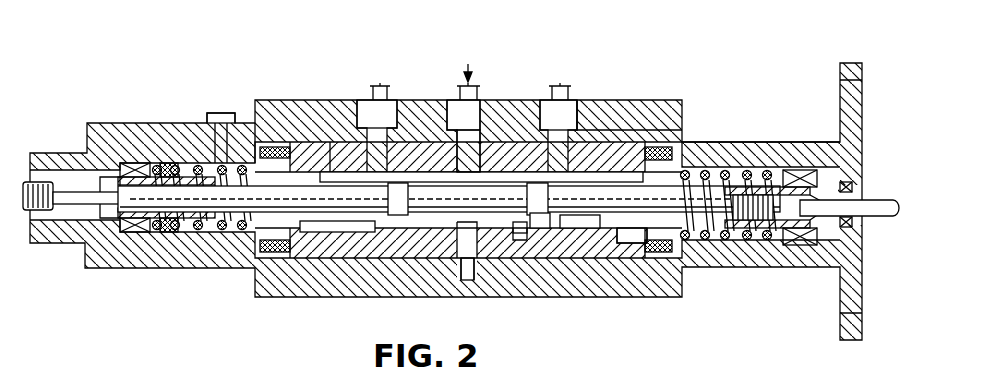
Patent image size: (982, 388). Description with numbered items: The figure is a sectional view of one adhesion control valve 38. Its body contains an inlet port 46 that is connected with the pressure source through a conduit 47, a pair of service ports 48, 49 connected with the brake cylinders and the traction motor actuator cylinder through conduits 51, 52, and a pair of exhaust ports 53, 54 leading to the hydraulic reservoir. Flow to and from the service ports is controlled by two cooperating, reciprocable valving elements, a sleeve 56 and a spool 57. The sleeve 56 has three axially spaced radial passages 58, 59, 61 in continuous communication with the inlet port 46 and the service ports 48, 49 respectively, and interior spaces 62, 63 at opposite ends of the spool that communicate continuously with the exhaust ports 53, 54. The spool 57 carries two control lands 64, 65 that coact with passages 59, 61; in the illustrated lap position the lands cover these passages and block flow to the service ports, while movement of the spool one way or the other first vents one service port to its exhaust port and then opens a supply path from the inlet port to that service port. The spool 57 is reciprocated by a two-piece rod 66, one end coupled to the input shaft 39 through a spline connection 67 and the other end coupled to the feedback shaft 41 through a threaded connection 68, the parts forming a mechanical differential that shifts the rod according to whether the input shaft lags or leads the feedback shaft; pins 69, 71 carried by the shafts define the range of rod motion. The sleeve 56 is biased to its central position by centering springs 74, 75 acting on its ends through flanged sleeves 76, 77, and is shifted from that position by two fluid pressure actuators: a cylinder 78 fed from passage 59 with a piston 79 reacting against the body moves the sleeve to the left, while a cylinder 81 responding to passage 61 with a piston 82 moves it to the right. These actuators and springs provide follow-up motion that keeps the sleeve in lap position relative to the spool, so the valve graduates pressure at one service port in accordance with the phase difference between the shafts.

The adhesion control valve 38 is at (614, 314).
The input shaft 39 is at (867, 217).
The feedback shaft 41 is at (68, 188).
The inlet port 46 is at (483, 150).
The conduit 47 is at (478, 86).
The service port 48 is at (393, 183).
The service port 49 is at (578, 118).
The conduit 51 is at (372, 90).
The conduit 52 is at (556, 90).
The exhaust port 53 is at (236, 150).
The exhaust port 54 is at (731, 142).
The sleeve 56 is at (330, 153).
The spool 57 is at (437, 217).
The radial passage 58 is at (466, 258).
The radial passage 59 is at (410, 183).
The radial passage 61 is at (540, 228).
The interior space 62 is at (345, 157).
The interior space 63 is at (577, 228).
The control land 64 is at (420, 180).
The control land 65 is at (535, 183).
The two-piece rod 66 is at (207, 166).
The spline connection 67 is at (742, 228).
The threaded connection 68 is at (170, 163).
The pin 69 is at (801, 246).
The pin 71 is at (113, 232).
The centering spring 74 is at (217, 240).
The centering spring 75 is at (713, 243).
The flanged sleeve 76 is at (298, 150).
The flanged sleeve 77 is at (637, 243).
The cylinder 78 is at (468, 158).
The piston 79 is at (625, 173).
The cylinder 81 is at (519, 233).
The piston 82 is at (308, 232).